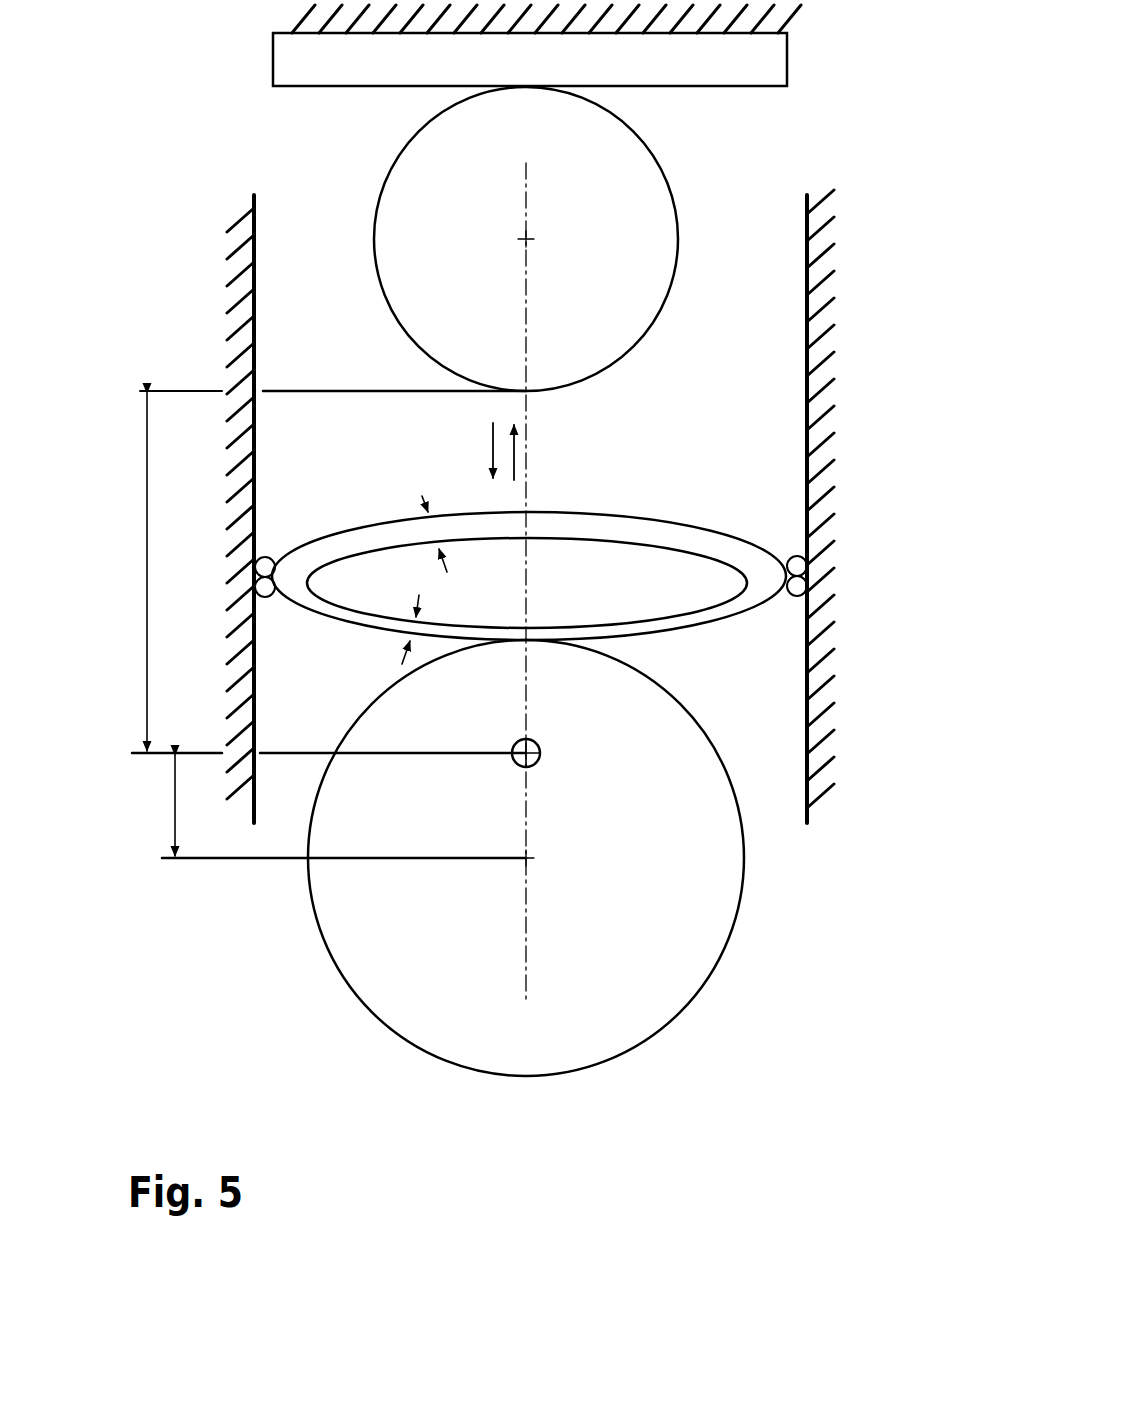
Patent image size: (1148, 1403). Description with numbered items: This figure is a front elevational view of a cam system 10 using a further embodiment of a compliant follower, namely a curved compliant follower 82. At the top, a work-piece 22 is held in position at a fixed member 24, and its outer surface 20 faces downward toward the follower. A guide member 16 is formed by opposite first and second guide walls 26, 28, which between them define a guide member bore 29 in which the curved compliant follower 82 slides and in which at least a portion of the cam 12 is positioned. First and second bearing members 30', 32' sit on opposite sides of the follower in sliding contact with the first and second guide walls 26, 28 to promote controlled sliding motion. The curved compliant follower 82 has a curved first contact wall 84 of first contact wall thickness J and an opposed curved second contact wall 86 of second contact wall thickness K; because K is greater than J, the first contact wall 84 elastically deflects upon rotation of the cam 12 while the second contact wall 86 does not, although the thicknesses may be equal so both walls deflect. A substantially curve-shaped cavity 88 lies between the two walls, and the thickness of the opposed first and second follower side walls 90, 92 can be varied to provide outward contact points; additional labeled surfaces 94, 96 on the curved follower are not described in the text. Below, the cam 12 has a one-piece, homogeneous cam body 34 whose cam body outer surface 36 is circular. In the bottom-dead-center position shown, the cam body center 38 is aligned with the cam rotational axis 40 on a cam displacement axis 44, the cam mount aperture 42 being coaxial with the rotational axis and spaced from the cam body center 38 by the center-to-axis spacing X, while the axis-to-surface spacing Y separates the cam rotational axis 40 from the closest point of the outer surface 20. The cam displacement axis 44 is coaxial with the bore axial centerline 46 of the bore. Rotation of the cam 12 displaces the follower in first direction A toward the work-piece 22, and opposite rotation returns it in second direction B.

The cam system 10 is at (848, 88).
The cam 12 is at (738, 903).
The guide member 16 is at (808, 276).
The outer surface 20 is at (617, 364).
The work-piece 22 is at (655, 178).
The fixed member 24 is at (285, 65).
The first guide wall 26 is at (256, 450).
The second guide wall 28 is at (803, 232).
The guide member bore 29 is at (790, 398).
The first bearing member 30' is at (279, 540).
The second bearing member 32' is at (838, 594).
The cam body 34 is at (387, 741).
The cam body outer surface 36 is at (308, 823).
The cam body center 38 is at (528, 858).
The cam rotational axis 40 is at (535, 745).
The cam mount aperture 42 is at (545, 760).
The cam displacement axis 44 is at (527, 688).
The bore axial centerline 46 is at (527, 470).
The curved compliant follower 82 is at (742, 530).
The first contact wall 84 is at (358, 625).
The second contact wall 86 is at (680, 540).
The curve-shaped cavity 88 is at (614, 572).
The first follower side wall 90 is at (292, 578).
The second follower side wall 92 is at (763, 572).
The lower right ring surface 94 is at (712, 627).
The upper left ring surface 96 is at (353, 527).
The first direction A is at (514, 438).
The second direction B is at (494, 466).
The first contact wall thickness J is at (402, 632).
The second contact wall thickness K is at (421, 527).
The center-to-axis spacing X is at (175, 805).
The axis-to-surface spacing Y is at (146, 572).